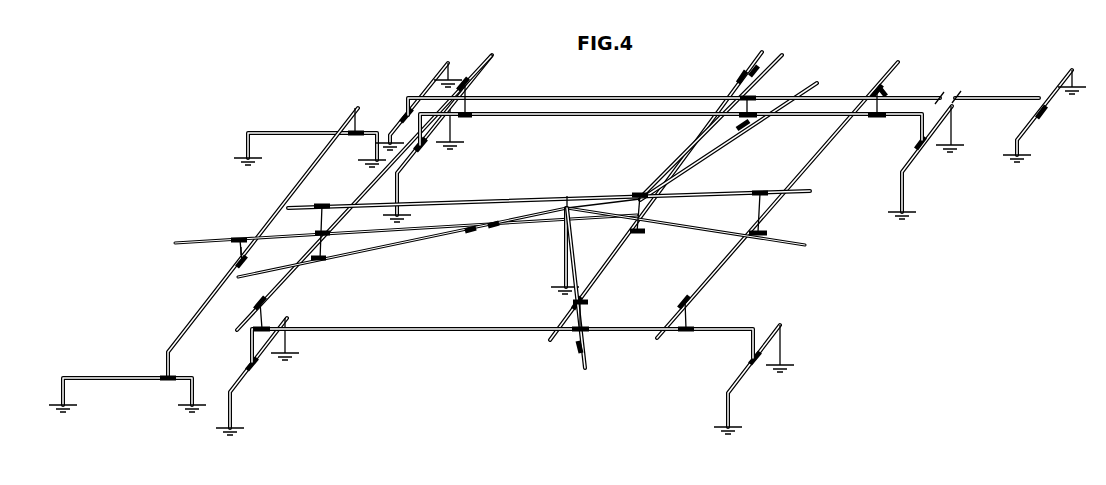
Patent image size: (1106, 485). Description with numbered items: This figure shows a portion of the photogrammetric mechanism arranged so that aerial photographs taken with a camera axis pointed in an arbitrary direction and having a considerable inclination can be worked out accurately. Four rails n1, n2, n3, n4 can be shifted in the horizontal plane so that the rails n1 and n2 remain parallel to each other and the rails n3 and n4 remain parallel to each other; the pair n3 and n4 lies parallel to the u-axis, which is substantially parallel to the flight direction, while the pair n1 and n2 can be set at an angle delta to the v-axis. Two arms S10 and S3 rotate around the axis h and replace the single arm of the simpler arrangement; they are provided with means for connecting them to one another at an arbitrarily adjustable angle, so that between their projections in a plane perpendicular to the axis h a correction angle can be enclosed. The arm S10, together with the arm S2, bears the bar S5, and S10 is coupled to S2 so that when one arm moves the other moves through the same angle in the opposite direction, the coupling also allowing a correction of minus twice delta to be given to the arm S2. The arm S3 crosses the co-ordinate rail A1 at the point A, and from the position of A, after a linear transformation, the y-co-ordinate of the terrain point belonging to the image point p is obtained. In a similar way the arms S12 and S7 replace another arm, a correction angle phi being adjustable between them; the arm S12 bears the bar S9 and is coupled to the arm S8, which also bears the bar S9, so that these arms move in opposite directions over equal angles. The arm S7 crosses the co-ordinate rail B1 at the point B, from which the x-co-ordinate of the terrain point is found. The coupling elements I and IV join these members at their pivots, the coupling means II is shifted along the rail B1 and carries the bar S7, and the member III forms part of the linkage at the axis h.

The co-ordinate rail A1 is at (205, 319).
The rail n1 is at (277, 291).
The rail n2 is at (710, 283).
The rail n3 is at (521, 113).
The rail n4 is at (460, 330).
The co-ordinate rail B1 is at (723, 98).
The point B is at (753, 78).
The point A is at (239, 242).
The axis h is at (599, 195).
The point p is at (640, 233).
The coupling element I is at (318, 226).
The coupling means II is at (240, 248).
The vertical member III is at (564, 261).
The coupling element IV is at (632, 196).
The arm S2 is at (782, 243).
The arm S3 is at (375, 234).
The bar S5 is at (457, 204).
The arm S7 is at (778, 63).
The arm S8 is at (578, 292).
The bar S9 is at (603, 272).
The arm S10 is at (388, 245).
The arm S12 is at (727, 139).